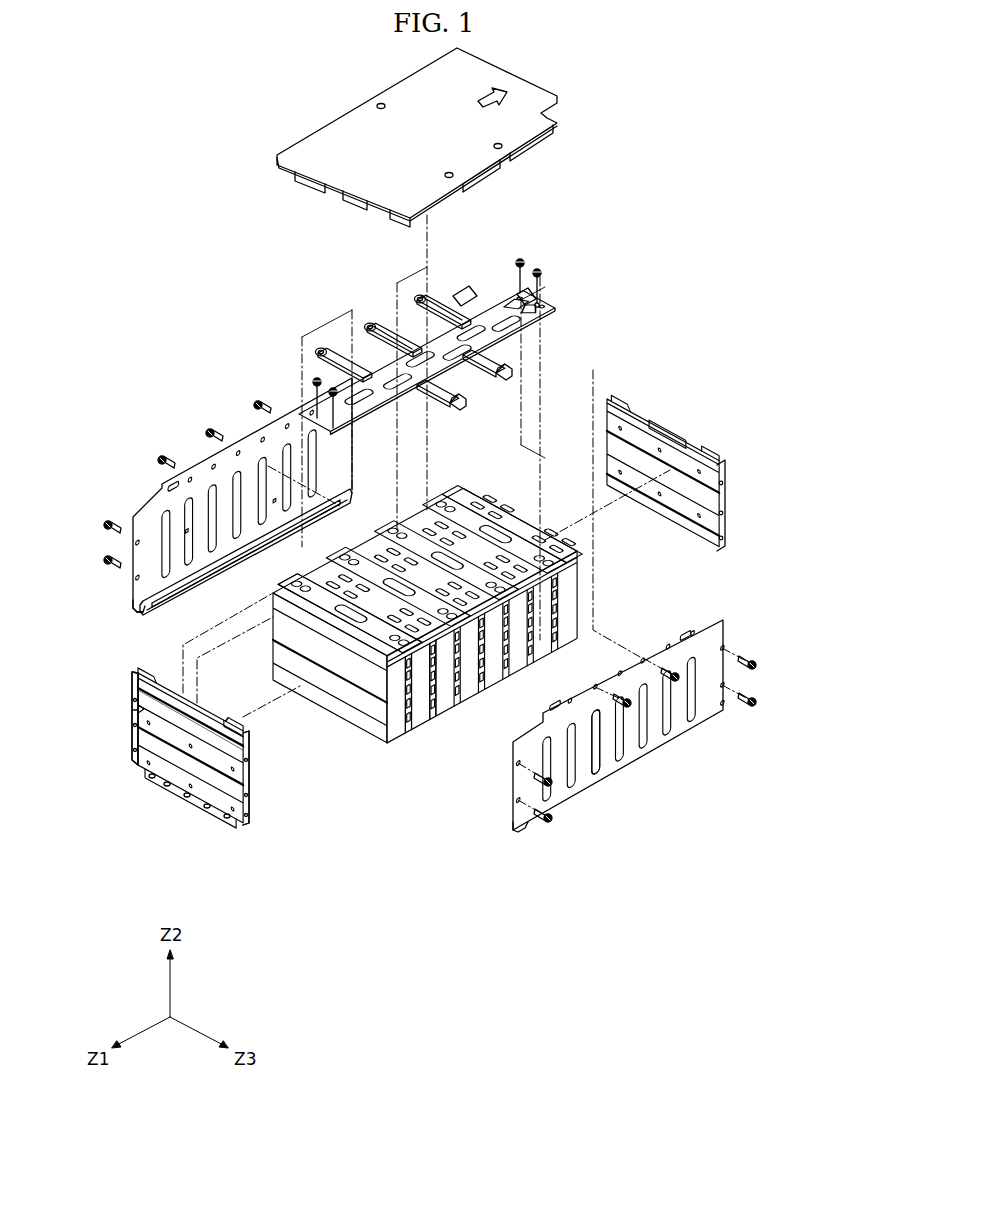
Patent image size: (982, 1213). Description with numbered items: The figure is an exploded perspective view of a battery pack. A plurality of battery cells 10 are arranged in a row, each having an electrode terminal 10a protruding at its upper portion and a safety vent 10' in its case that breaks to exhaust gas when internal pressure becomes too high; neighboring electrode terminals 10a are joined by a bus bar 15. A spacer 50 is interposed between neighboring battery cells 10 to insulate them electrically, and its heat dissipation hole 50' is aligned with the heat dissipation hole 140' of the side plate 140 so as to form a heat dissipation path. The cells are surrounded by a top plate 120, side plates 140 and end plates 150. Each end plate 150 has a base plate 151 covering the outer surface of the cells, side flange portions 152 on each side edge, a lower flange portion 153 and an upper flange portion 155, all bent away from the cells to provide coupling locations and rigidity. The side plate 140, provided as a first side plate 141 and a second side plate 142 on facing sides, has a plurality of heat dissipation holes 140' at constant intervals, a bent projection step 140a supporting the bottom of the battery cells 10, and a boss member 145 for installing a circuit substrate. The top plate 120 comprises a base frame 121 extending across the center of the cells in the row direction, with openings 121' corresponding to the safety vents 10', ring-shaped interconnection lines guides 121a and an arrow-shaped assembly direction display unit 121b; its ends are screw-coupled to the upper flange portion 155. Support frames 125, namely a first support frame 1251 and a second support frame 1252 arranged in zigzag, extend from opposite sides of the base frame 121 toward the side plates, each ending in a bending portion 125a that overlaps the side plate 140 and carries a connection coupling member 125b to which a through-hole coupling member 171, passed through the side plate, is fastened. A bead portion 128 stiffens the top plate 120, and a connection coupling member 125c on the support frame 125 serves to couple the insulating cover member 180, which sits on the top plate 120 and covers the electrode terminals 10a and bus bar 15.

The battery cell 10 is at (428, 633).
The safety vent 10' is at (512, 517).
The electrode terminal 10a is at (373, 645).
The bus bar 15 is at (300, 580).
The spacer 50 is at (426, 714).
The heat dissipation hole 50' is at (452, 699).
The top plate 120 is at (557, 300).
The base frame 121 is at (514, 268).
The opening 121' is at (563, 323).
The interconnection lines guide 121a is at (539, 268).
The assembly direction display unit 121b is at (315, 386).
The support frame 125 is at (428, 297).
The bending portion 125a is at (418, 297).
The connection coupling member 125b is at (368, 323).
The connection coupling member 125c is at (378, 328).
The first support frame 1251 is at (387, 340).
The second support frame 1252 is at (433, 400).
The bead portion 128 is at (454, 297).
The side plate 140 is at (246, 552).
The first side plate 141 is at (196, 458).
The second side plate 142 is at (652, 640).
The heat dissipation hole 140' is at (618, 761).
The bent projection step 140a is at (137, 613).
The boss member 145 is at (689, 655).
The end plate 150 is at (711, 429).
The base plate 151 is at (207, 790).
The flange portion 152 is at (132, 748).
The lower flange portion 153 is at (182, 796).
The upper flange portion 155 is at (136, 705).
The through-hole coupling member 171 is at (154, 458).
The cover member 180 is at (356, 122).